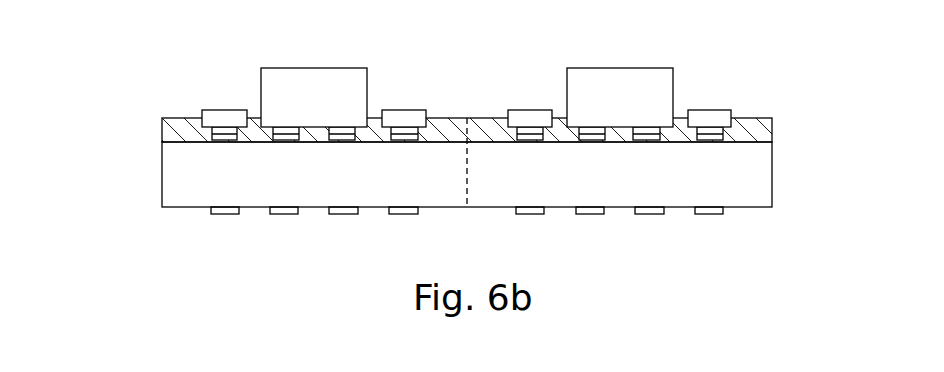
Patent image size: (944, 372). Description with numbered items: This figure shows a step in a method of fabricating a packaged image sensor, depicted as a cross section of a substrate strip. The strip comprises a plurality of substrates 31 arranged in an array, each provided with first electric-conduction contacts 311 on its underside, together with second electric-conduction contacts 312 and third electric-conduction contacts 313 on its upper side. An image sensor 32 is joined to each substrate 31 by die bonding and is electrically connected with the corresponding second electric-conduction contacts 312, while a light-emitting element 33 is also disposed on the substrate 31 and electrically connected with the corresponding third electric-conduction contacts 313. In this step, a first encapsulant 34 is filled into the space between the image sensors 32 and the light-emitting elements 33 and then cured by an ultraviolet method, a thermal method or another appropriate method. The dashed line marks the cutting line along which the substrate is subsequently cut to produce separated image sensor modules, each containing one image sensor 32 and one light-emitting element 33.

The substrate 31 is at (172, 176).
The first electric-conduction contact 311 is at (228, 214).
The second electric-conduction contact 312 is at (340, 138).
The third electric-conduction contact 313 is at (210, 137).
The image sensor 32 is at (293, 85).
The light-emitting element 33 is at (222, 118).
The first encapsulant 34 is at (467, 118).